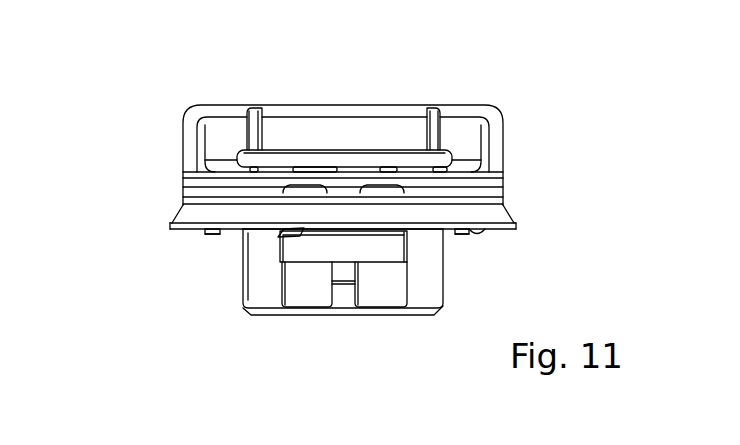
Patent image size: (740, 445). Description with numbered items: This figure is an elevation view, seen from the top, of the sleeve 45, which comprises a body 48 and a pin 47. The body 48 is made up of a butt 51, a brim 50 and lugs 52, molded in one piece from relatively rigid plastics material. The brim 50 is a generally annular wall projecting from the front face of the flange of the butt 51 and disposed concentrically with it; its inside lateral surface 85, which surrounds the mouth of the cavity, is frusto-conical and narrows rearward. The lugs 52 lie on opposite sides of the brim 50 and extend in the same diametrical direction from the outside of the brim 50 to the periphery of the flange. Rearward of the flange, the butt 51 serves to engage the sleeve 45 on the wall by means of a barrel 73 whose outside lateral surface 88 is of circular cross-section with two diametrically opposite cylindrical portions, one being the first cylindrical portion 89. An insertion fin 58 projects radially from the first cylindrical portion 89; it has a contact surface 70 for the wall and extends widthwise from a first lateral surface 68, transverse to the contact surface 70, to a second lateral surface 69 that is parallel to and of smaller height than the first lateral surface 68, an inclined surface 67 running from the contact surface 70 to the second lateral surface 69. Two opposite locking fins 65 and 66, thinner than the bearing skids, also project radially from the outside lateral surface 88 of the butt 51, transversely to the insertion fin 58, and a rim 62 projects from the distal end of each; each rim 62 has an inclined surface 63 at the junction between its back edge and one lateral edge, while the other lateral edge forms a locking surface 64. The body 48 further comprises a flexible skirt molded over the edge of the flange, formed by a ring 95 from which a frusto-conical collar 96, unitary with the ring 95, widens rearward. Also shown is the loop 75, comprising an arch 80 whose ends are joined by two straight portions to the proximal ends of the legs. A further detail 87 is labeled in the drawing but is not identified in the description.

The sleeve 45 is at (124, 62).
The pin 47 is at (476, 147).
The body 48 is at (492, 306).
The brim 50 is at (386, 125).
The butt 51 is at (403, 297).
The lugs 52 is at (213, 144).
The insertion fin 58 is at (303, 248).
The rim 62 is at (203, 229).
The inclined surface 63 is at (212, 242).
The locking surface 64 is at (460, 242).
The locking fin 65 is at (488, 236).
The locking fin 66 is at (177, 236).
The inclined surface 67 is at (288, 228).
The first lateral surface 68 is at (418, 251).
The second lateral surface 69 is at (271, 263).
The contact surface 70 is at (347, 232).
The barrel 73 is at (263, 300).
The loop 75 is at (413, 155).
The arch 80 is at (348, 172).
The inside lateral surface 85 is at (283, 117).
The bottom plate 87 is at (333, 316).
The outside lateral surface 88 is at (385, 297).
The first cylindrical portion 89 is at (270, 238).
The ring 95 is at (500, 187).
The frusto-conical collar 96 is at (498, 210).